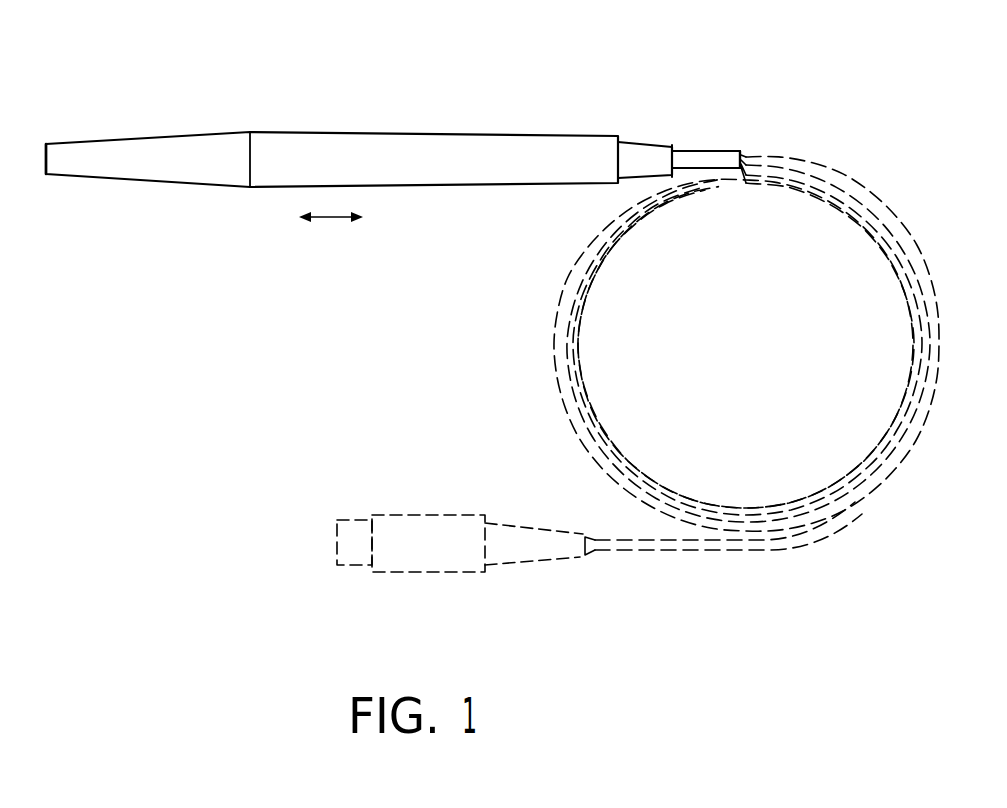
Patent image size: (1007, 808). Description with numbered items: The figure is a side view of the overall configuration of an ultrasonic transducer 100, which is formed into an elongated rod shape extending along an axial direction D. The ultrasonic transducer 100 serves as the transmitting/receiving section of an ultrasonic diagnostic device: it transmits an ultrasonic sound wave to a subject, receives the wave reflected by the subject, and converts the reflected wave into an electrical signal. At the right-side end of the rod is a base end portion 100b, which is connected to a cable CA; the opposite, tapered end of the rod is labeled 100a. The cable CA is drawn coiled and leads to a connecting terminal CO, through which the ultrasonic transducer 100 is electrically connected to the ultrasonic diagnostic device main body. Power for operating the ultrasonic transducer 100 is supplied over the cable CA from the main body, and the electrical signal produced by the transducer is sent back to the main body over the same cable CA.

The ultrasonic transducer 100 is at (344, 129).
The proximal tip end 100a is at (46, 162).
The base end portion 100b is at (742, 157).
The axial direction D is at (328, 219).
The cable CA is at (553, 360).
The connecting terminal CO is at (336, 542).